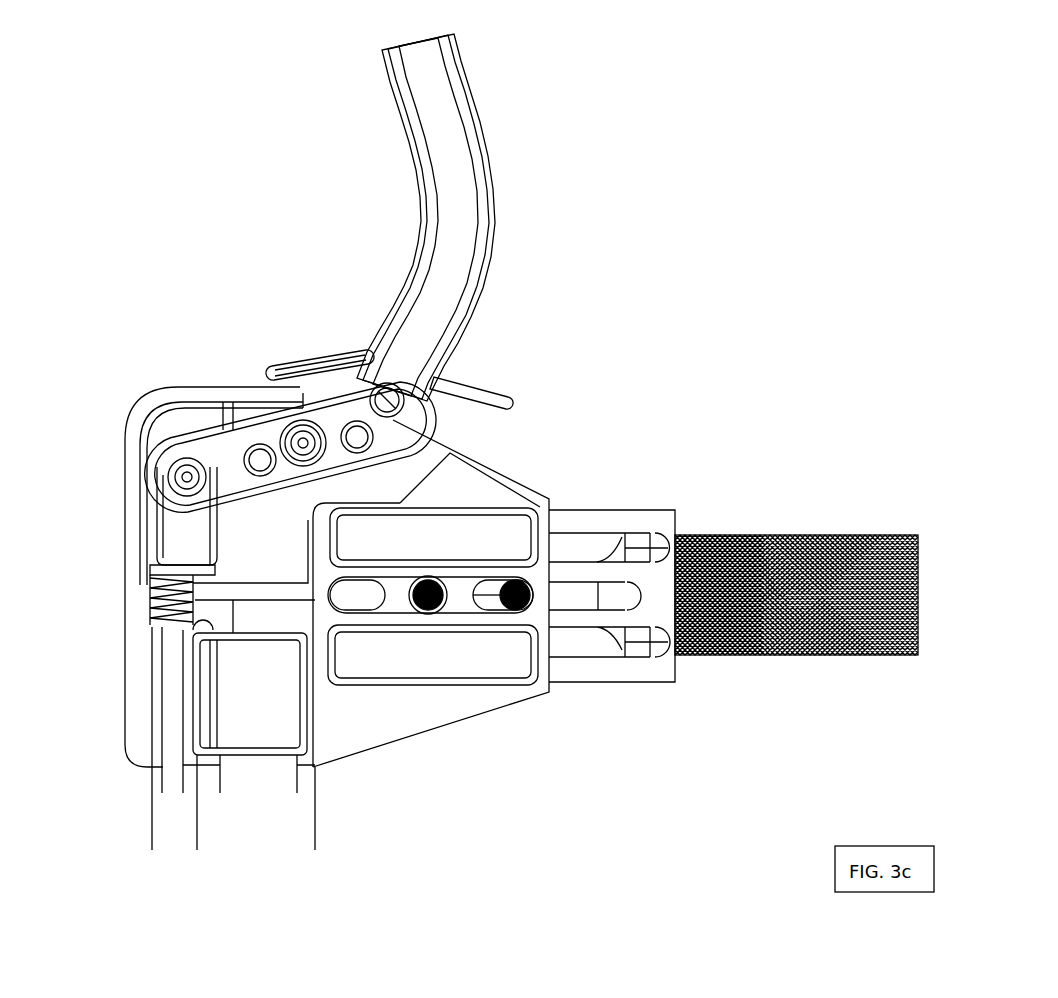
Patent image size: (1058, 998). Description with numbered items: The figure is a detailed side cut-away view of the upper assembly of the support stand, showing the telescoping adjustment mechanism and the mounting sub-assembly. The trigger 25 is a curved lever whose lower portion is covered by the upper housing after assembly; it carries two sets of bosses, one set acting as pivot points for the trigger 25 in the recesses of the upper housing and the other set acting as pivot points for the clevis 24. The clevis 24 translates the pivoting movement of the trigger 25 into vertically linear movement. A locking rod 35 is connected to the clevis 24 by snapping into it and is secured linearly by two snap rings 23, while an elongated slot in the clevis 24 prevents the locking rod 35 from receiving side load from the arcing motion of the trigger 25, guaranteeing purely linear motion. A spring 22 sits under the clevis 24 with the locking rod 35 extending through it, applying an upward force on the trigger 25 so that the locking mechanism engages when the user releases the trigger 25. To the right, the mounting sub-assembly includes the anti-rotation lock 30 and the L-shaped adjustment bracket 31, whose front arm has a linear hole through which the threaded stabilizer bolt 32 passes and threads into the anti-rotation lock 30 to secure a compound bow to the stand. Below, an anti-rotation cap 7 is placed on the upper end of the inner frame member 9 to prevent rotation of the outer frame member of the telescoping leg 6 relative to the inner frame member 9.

The telescoping leg 6 is at (303, 803).
The anti-rotation cap 7 is at (275, 723).
The inner frame member 9 is at (277, 770).
The spring 22 is at (157, 613).
The snap rings 23 is at (150, 565).
The clevis 24 is at (182, 512).
The trigger 25 is at (392, 168).
The anti-rotation lock 30 is at (637, 650).
The L-shaped adjustment bracket 31 is at (673, 508).
The stabilizer bolt 32 is at (815, 527).
The locking rod 35 is at (173, 702).